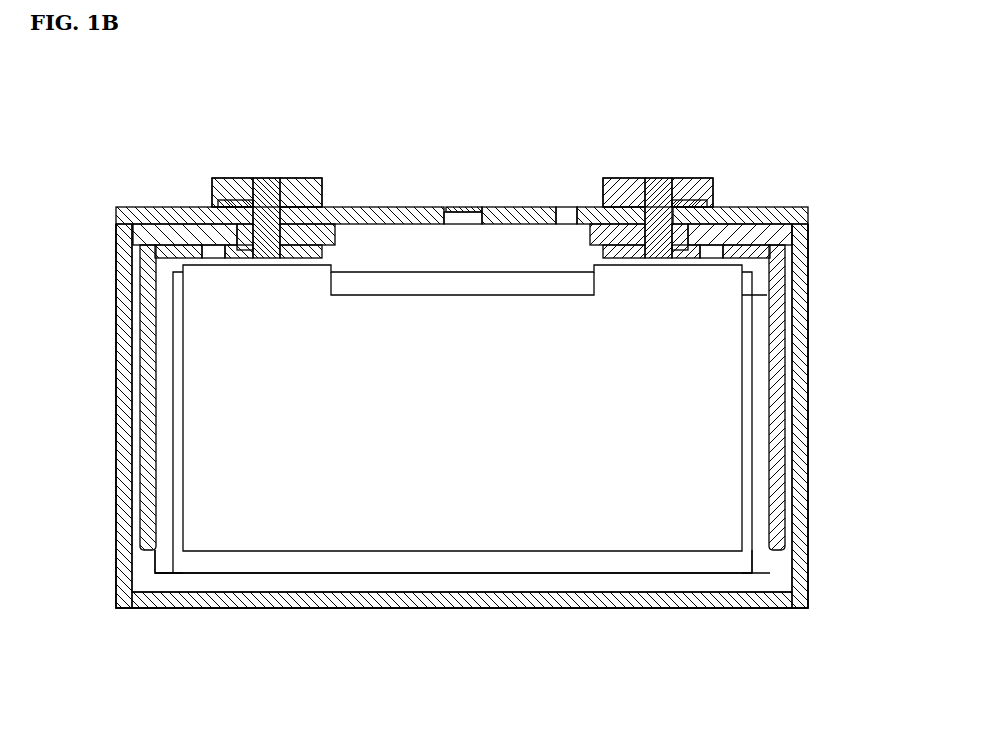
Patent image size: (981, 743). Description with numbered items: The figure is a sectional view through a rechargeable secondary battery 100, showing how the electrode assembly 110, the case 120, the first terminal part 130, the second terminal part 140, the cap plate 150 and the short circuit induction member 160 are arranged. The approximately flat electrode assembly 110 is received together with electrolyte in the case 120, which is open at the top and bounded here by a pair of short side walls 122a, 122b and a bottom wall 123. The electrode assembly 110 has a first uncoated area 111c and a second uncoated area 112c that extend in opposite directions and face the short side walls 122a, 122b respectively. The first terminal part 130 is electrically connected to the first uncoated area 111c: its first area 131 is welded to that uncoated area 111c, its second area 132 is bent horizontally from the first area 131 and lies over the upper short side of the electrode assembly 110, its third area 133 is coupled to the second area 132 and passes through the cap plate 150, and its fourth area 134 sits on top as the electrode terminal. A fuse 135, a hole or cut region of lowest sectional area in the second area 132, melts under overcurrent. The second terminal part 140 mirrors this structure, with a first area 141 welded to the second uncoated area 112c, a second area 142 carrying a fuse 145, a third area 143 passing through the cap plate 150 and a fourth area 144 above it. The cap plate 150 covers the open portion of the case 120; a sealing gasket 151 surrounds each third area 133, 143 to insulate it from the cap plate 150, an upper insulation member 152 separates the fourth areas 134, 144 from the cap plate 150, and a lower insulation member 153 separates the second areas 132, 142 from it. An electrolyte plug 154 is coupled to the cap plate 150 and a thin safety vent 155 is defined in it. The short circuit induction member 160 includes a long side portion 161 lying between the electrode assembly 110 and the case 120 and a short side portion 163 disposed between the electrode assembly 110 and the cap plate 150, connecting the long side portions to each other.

The rechargeable secondary battery 100 is at (868, 131).
The electrode assembly 110 is at (575, 583).
The first uncoated area 111c is at (165, 565).
The second uncoated area 112c is at (760, 565).
The case 120 is at (112, 612).
The short side wall 122a is at (115, 462).
The short side wall 122b is at (810, 462).
The bottom wall 123 is at (478, 608).
The first terminal part 130 is at (242, 166).
The first area 131 is at (148, 357).
The second area 132 is at (142, 250).
The third area 133 is at (265, 178).
The fourth area 134 is at (305, 178).
The fuse 135 is at (214, 250).
The second terminal part 140 is at (683, 166).
The first area 141 is at (777, 357).
The second area 142 is at (785, 252).
The third area 143 is at (660, 178).
The fourth area 144 is at (618, 178).
The fuse 145 is at (716, 250).
The cap plate 150 is at (400, 207).
The sealing gasket 151 is at (232, 200).
The upper insulation member 152 is at (330, 207).
The lower insulation member 153 is at (142, 233).
The electrolyte plug 154 is at (566, 207).
The safety vent 155 is at (463, 207).
The short circuit induction member 160 is at (354, 560).
The long side portion 161 is at (265, 540).
The short side portion 163 is at (322, 283).